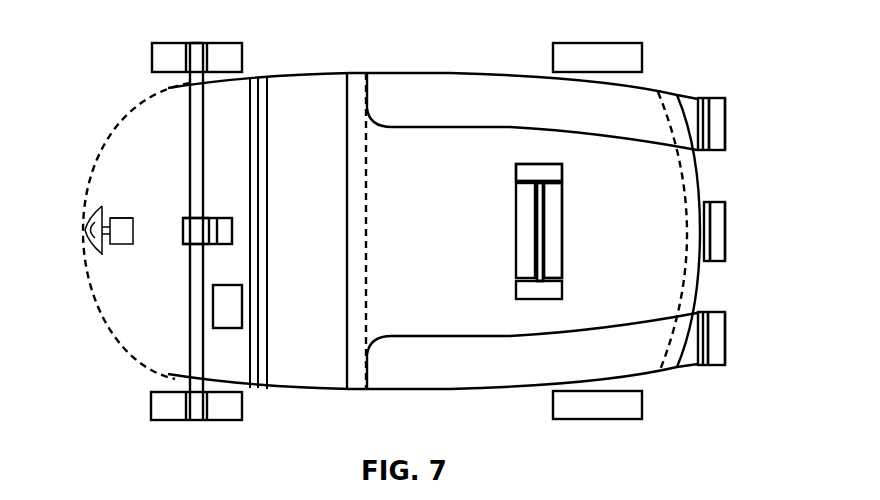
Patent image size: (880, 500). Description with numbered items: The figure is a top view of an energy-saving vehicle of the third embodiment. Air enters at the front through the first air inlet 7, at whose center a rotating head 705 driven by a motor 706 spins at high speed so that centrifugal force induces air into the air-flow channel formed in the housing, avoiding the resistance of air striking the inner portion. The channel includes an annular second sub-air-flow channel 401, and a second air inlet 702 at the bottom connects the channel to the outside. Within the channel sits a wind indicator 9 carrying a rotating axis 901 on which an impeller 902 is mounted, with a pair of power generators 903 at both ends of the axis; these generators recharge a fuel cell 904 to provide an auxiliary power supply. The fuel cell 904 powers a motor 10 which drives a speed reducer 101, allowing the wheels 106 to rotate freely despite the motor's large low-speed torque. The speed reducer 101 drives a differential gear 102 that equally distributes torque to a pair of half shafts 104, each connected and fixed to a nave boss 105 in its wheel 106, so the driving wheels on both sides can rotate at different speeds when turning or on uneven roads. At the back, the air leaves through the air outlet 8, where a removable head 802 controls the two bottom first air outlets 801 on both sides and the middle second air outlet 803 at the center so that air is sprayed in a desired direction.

The first air inlet 7 is at (101, 212).
The air outlet 8 is at (708, 100).
The wind indicator 9 is at (515, 233).
The motor 10 is at (213, 233).
The speed reducer 101 is at (193, 237).
The differential gear 102 is at (187, 246).
The half shafts 104 is at (193, 148).
The nave boss 105 is at (188, 43).
The wheels 106 is at (162, 53).
The second sub-air-flow channel 401 is at (508, 93).
The second air inlet 702 is at (260, 370).
The rotating head 705 is at (88, 230).
The motor 706 is at (122, 217).
The first air outlets 801 is at (766, 110).
The removable head 802 is at (710, 112).
The second air outlet 803 is at (766, 220).
The rotating axis 901 is at (540, 190).
The impeller 902 is at (552, 235).
The power generators 903 is at (558, 175).
The fuel cell 904 is at (217, 290).